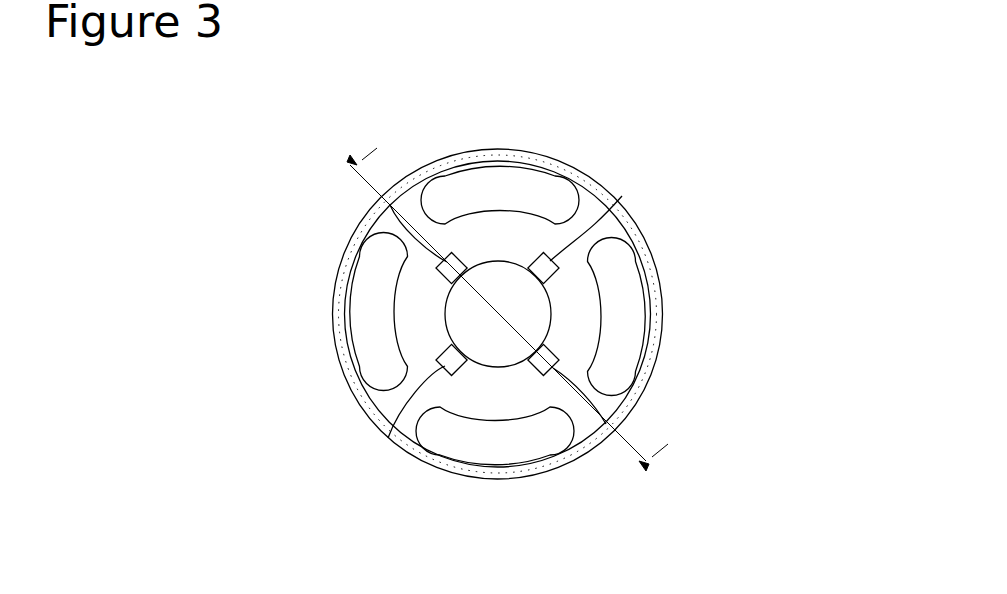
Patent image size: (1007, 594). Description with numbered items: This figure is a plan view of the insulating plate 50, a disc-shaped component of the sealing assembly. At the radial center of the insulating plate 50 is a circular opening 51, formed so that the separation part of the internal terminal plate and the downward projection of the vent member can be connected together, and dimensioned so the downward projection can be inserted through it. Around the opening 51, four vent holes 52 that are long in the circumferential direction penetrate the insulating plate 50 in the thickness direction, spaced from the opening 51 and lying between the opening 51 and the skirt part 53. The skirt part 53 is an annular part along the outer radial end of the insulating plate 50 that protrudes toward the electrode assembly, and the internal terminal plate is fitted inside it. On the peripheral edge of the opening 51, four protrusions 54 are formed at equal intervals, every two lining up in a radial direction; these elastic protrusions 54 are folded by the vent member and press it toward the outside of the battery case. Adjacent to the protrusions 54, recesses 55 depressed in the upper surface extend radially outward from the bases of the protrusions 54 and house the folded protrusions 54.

The insulating plate 50 is at (699, 126).
The opening 51 is at (497, 347).
The vent holes 52 is at (637, 333).
The skirt part 53 is at (333, 293).
The protrusions 54 is at (613, 215).
The recesses 55 is at (562, 274).